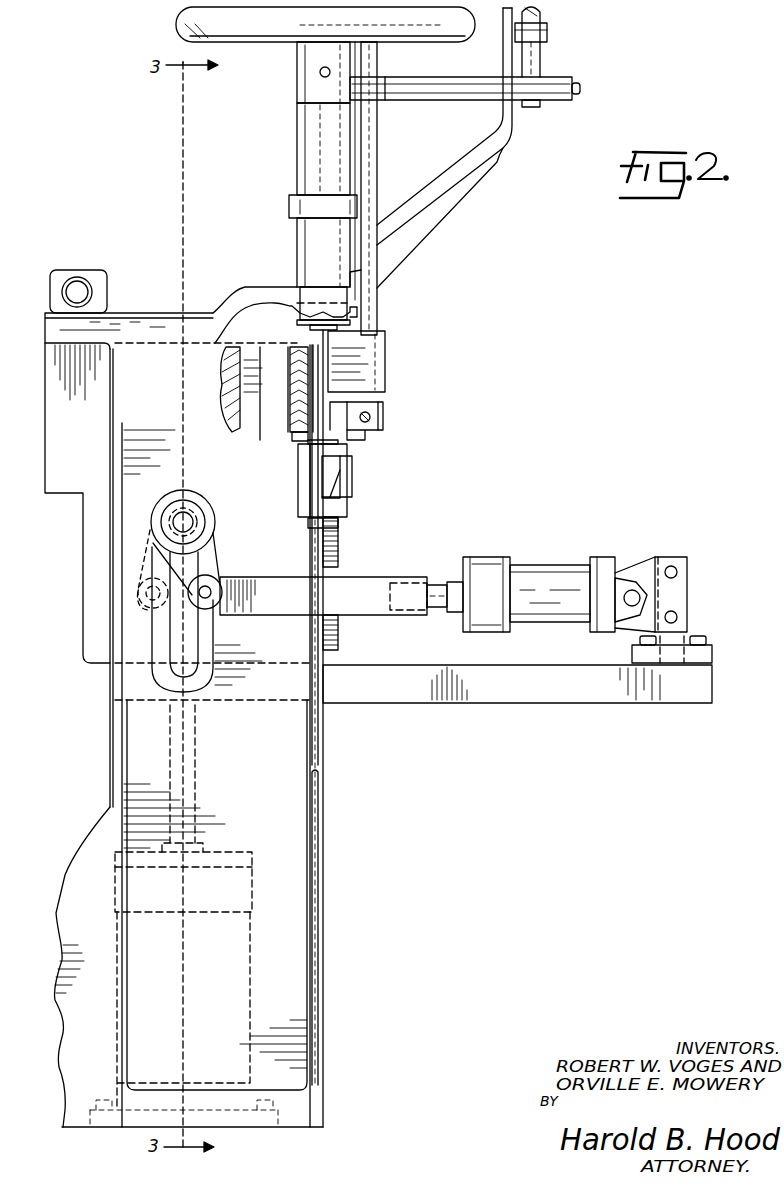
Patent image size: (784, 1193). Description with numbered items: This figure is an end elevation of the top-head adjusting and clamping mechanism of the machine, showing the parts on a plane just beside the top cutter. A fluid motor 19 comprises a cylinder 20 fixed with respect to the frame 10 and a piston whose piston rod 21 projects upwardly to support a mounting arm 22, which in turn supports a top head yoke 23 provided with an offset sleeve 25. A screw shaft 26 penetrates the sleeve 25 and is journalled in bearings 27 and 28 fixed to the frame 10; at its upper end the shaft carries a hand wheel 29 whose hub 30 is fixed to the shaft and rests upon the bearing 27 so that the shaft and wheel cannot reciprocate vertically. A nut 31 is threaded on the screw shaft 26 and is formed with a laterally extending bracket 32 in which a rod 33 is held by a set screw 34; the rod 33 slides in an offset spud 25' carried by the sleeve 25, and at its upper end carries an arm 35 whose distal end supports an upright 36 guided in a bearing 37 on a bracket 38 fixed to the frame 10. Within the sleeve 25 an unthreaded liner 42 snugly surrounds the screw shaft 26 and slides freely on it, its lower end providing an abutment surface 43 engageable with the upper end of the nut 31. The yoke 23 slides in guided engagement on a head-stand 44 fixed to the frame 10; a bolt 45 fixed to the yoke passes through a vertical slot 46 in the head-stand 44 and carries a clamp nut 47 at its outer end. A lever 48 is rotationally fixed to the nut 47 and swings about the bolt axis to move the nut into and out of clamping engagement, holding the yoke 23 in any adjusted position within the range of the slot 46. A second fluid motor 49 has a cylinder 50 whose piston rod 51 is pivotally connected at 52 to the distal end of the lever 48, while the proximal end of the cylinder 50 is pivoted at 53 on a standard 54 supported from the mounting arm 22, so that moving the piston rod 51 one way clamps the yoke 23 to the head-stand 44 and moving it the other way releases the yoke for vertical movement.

The frame 10 is at (336, 834).
The fluid motor 19 is at (268, 895).
The cylinder 20 is at (250, 952).
The piston rod 21 is at (196, 763).
The mounting arm 22 is at (588, 705).
The top head yoke 23 is at (72, 480).
The offset sleeve 25 is at (238, 355).
The offset spud 25' is at (378, 361).
The screw shaft 26 is at (340, 555).
The bearing 27 is at (300, 148).
The bearing 28 is at (300, 253).
The hand wheel 29 is at (252, 42).
The hub 30 is at (301, 75).
The nut 31 is at (350, 500).
The bracket 32 is at (385, 416).
The rod 33 is at (378, 308).
The set screw 34 is at (370, 422).
The arm 35 is at (470, 75).
The upright 36 is at (542, 16).
The bearing 37 is at (550, 34).
The bracket 38 is at (440, 218).
The liner 42 is at (302, 393).
The abutment surface 43 is at (300, 437).
The head-stand 44 is at (130, 738).
The bolt 45 is at (185, 512).
The vertical slot 46 is at (172, 640).
The clamp nut 47 is at (179, 505).
The lever 48 is at (218, 550).
The fluid motor 49 is at (500, 560).
The cylinder 50 is at (545, 565).
The piston rod 51 is at (390, 577).
The pivotal connection 52 is at (210, 598).
The pivotal mounting 53 is at (630, 592).
The standard 54 is at (688, 560).